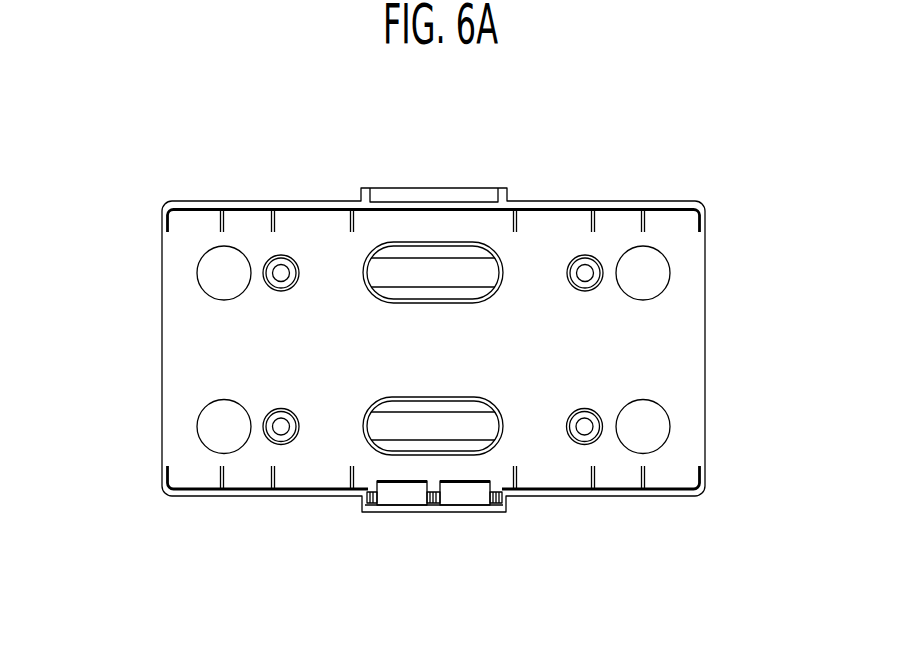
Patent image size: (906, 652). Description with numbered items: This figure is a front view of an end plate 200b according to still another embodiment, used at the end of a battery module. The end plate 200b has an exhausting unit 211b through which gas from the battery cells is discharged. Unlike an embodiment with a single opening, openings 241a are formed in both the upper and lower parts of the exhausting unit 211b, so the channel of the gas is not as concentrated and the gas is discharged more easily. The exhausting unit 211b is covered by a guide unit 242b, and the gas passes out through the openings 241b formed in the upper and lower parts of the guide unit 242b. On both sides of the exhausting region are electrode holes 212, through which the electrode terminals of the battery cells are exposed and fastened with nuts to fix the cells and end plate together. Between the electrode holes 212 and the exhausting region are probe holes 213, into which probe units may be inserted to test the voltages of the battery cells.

The end plate 200b is at (126, 158).
The exhausting unit 211b is at (511, 245).
The electrode holes 212 is at (648, 282).
The probe holes 213 is at (588, 273).
The openings 241a is at (386, 291).
The openings 241b is at (435, 406).
The guide unit 242b is at (448, 270).